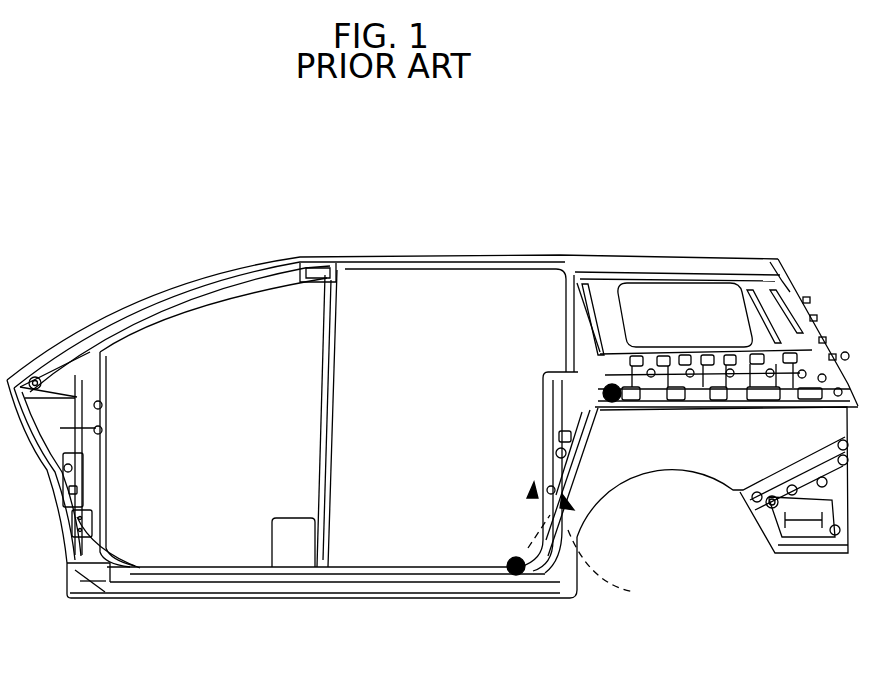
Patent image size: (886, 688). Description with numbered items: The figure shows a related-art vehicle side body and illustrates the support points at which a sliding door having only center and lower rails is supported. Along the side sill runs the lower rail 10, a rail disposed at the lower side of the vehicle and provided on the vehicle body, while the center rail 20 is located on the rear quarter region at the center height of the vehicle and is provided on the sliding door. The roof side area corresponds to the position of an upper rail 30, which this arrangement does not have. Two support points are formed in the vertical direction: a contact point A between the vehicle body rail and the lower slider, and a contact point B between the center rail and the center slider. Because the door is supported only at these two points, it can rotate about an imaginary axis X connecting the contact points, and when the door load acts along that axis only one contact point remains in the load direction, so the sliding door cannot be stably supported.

The lower rail 10 is at (402, 567).
The center rail 20 is at (698, 390).
The upper rail 30 is at (412, 257).
The contact point A is at (514, 575).
The contact point B is at (608, 388).
The imaginary axis X is at (592, 562).